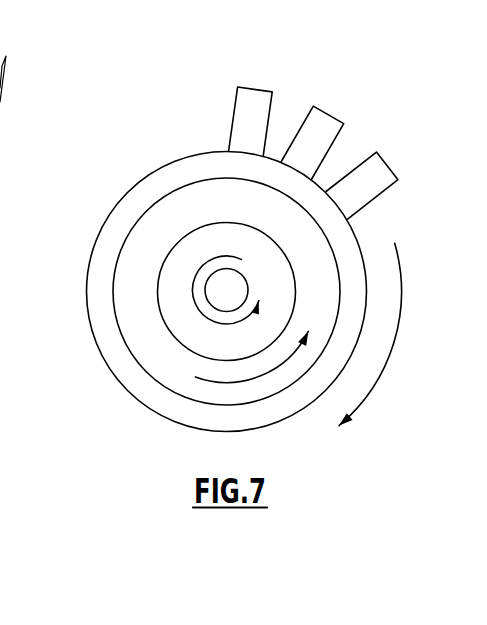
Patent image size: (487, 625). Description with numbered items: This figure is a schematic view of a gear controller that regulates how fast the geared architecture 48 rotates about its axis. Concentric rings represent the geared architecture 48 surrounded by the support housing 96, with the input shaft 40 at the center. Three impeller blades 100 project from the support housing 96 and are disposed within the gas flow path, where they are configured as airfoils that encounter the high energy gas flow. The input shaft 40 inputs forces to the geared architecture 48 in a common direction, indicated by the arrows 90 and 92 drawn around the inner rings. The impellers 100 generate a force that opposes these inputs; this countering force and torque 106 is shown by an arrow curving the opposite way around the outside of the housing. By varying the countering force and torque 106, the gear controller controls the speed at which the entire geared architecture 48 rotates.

The input shaft 40 is at (245, 276).
The geared architecture 48 is at (295, 272).
The input torque and force arrow 90 is at (223, 324).
The input torque and force arrow 92 is at (263, 375).
The support housing 96 is at (162, 415).
The impeller blades 100 is at (253, 92).
The countering force and torque 106 is at (392, 348).